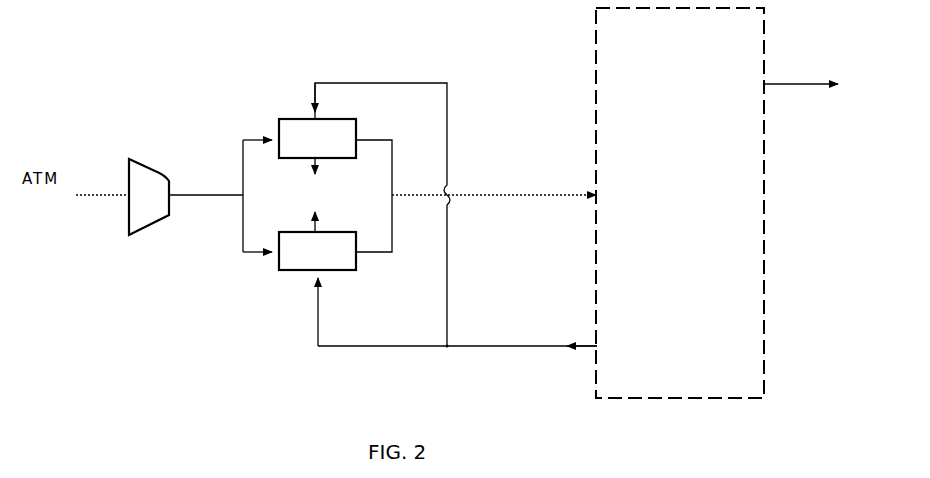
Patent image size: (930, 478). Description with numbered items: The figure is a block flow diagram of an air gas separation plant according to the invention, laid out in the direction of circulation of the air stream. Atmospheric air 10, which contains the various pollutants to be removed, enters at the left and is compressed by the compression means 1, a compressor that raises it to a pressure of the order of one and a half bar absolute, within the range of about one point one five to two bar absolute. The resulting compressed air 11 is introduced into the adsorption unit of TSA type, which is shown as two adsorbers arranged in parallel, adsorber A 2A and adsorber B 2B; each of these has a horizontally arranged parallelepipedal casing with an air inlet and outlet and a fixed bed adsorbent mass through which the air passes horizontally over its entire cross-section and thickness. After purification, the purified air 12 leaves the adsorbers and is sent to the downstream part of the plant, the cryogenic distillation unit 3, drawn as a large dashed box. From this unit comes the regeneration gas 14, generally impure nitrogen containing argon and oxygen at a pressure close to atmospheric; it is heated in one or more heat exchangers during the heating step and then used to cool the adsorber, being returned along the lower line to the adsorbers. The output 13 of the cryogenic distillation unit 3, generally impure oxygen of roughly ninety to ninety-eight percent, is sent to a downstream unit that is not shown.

The compression means 1 is at (150, 185).
The atmospheric air 10 is at (96, 207).
The compressed air 11 is at (200, 196).
The adsorber A 2A is at (294, 130).
The adsorber B 2B is at (298, 258).
The purified air 12 is at (496, 197).
The cryogenic distillation unit 3 is at (748, 218).
The output 13 is at (801, 84).
The regeneration gas 14 is at (515, 347).